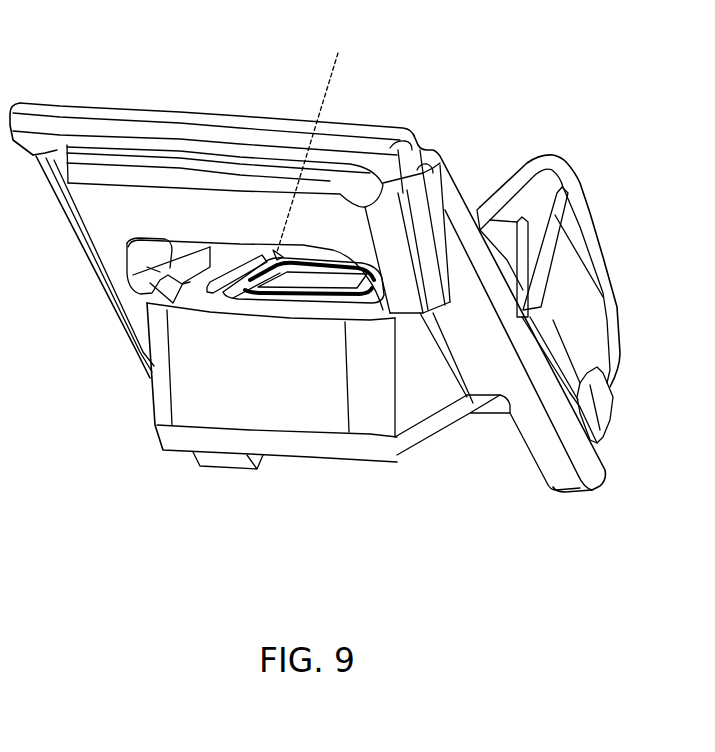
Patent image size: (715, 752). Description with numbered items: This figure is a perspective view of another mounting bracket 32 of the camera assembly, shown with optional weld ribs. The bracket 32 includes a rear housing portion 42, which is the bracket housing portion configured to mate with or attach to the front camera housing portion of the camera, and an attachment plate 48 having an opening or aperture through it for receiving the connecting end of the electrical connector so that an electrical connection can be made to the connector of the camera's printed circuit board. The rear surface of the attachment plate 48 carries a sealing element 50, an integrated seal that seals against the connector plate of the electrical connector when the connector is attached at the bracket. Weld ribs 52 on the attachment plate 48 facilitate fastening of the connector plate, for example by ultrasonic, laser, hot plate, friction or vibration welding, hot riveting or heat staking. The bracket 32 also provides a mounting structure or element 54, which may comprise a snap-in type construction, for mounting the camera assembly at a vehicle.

The mounting bracket 32 is at (592, 131).
The rear housing portion 42 is at (425, 395).
The attachment plate 48 is at (182, 300).
The sealing element 50 is at (308, 298).
The weld ribs 52 is at (210, 289).
The mounting structure or element 54 is at (570, 315).